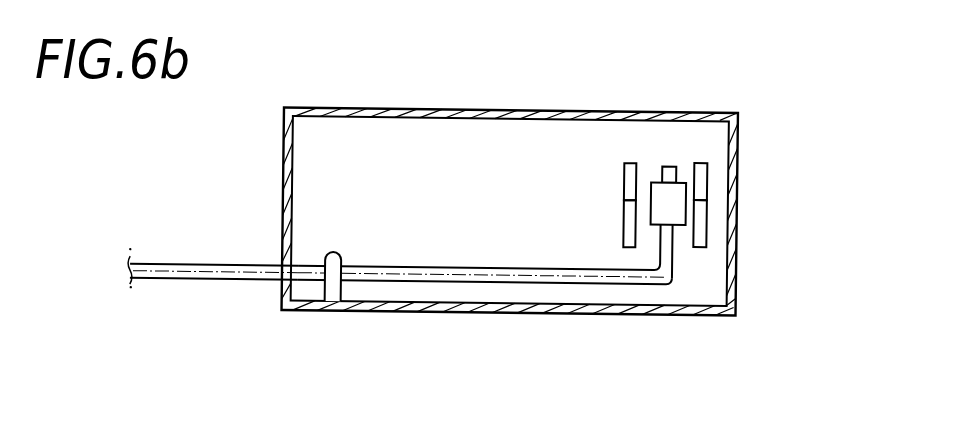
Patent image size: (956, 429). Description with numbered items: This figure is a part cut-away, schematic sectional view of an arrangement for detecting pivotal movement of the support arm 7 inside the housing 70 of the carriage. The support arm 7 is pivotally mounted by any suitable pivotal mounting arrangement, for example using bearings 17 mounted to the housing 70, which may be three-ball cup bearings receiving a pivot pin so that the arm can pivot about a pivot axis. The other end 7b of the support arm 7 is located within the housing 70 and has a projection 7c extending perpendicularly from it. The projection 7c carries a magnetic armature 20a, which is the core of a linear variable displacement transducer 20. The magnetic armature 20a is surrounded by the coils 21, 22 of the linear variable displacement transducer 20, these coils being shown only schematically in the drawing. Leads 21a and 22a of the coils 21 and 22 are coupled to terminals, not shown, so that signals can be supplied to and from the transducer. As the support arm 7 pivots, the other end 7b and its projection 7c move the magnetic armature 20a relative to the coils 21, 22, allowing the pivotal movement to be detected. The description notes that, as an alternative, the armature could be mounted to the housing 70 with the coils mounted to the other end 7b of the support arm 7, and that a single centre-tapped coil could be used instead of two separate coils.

The housing 70 is at (527, 108).
The support arm 7 is at (233, 281).
The other end of the support arm 7b is at (647, 280).
The projection 7c is at (675, 280).
The bearings 17 is at (343, 252).
The linear variable displacement transducer 20 is at (690, 155).
The magnetic armature 20a is at (663, 208).
The coil 21 is at (624, 218).
The lead 21a is at (706, 242).
The coil 22 is at (624, 171).
The lead 22a is at (709, 165).